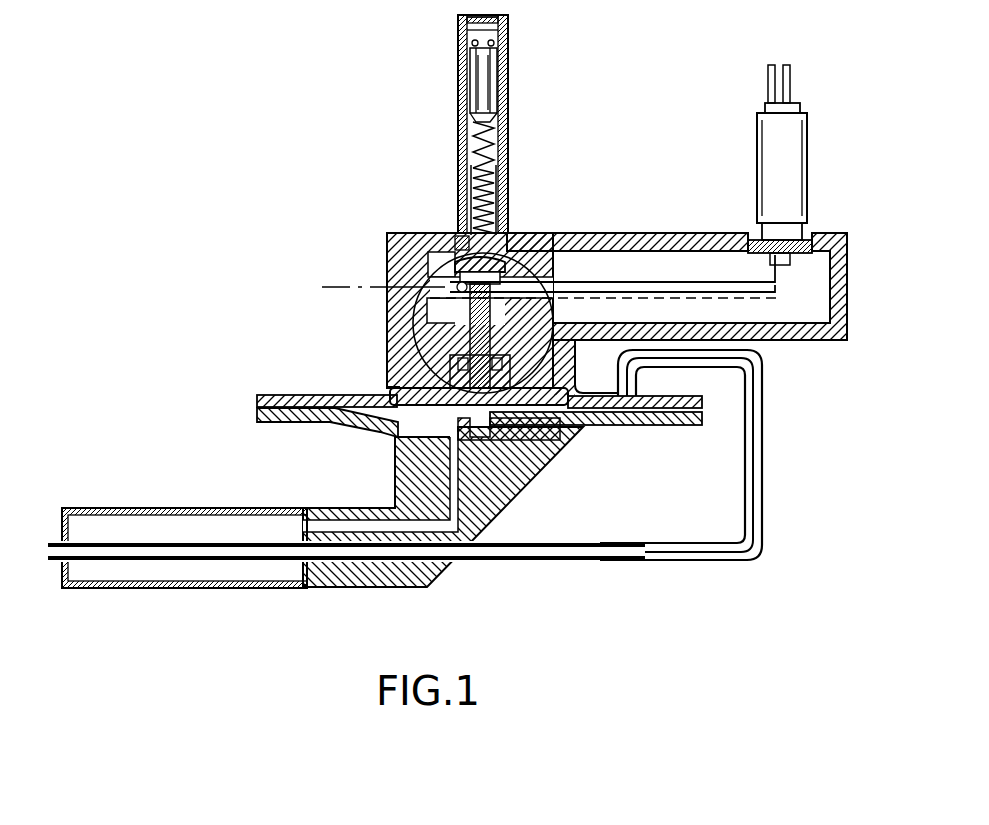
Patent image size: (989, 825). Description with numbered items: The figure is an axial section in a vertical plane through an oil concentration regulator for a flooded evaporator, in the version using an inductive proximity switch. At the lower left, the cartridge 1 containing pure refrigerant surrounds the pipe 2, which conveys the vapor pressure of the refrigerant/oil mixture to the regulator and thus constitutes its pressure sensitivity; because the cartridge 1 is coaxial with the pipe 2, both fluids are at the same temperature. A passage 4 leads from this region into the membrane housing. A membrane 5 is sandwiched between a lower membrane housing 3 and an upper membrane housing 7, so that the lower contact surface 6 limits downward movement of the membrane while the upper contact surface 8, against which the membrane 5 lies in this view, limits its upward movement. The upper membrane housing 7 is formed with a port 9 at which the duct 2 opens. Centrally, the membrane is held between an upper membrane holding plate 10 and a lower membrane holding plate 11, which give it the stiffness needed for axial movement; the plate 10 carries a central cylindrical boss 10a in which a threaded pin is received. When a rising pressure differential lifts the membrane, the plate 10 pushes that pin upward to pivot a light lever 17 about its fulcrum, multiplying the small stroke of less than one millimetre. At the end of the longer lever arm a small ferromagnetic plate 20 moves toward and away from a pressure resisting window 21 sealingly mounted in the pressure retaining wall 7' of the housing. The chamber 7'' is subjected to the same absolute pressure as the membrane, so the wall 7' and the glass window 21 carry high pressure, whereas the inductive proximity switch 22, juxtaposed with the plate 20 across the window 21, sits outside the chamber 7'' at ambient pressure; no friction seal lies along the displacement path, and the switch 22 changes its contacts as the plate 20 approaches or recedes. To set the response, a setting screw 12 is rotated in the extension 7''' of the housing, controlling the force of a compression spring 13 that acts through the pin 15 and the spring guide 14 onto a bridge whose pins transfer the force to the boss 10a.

The cartridge 1 is at (128, 520).
The pipe 2 is at (48, 552).
The lower membrane housing 3 is at (505, 487).
The channel 4 is at (350, 527).
The membrane 5 is at (365, 397).
The lower contact surface 6 is at (586, 425).
The upper membrane housing 7 is at (448, 310).
The pressure retaining wall 7' is at (627, 208).
The chamber 7'' is at (728, 286).
The extension 7''' is at (516, 124).
The upper contact surface 8 is at (312, 395).
The port 9 is at (620, 386).
The upper membrane holding plate 10 is at (430, 387).
The central cylindrical boss 10a is at (445, 355).
The lower membrane holding plate 11 is at (552, 462).
The setting screw 12 is at (500, 78).
The compression spring 13 is at (507, 200).
The spring guide 14 is at (507, 222).
The pin 15 is at (460, 242).
The lever 17 is at (617, 285).
The ferromagnetic plate 20 is at (793, 263).
The pressure resisting window 21 is at (782, 240).
The inductive proximity switch 22 is at (793, 153).